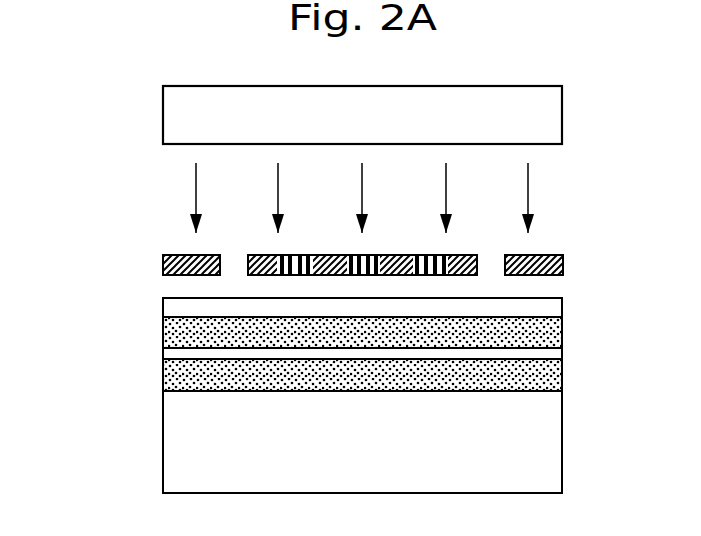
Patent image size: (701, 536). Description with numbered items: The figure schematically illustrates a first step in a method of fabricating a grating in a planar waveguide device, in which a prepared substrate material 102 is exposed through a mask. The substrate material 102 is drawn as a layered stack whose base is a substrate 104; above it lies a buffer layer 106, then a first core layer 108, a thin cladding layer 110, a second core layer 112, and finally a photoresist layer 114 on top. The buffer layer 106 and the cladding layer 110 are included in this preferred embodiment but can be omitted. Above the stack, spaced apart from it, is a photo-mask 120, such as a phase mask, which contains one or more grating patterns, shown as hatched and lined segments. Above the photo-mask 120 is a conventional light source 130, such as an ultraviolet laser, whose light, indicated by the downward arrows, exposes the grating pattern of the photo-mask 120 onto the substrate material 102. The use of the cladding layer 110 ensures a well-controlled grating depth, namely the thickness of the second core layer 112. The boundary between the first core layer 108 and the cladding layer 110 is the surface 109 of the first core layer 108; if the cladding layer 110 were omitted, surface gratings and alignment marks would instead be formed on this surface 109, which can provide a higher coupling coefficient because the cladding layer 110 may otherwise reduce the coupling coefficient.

The light source 130 is at (562, 108).
The photo-mask 120 is at (563, 262).
The photoresist layer 114 is at (562, 300).
The second core layer 112 is at (562, 325).
The cladding layer 110 is at (562, 352).
The surface of first core layer 109 is at (182, 357).
The first core layer 108 is at (562, 372).
The buffer layer 106 is at (562, 389).
The substrate 104 is at (562, 437).
The substrate material 102 is at (104, 405).